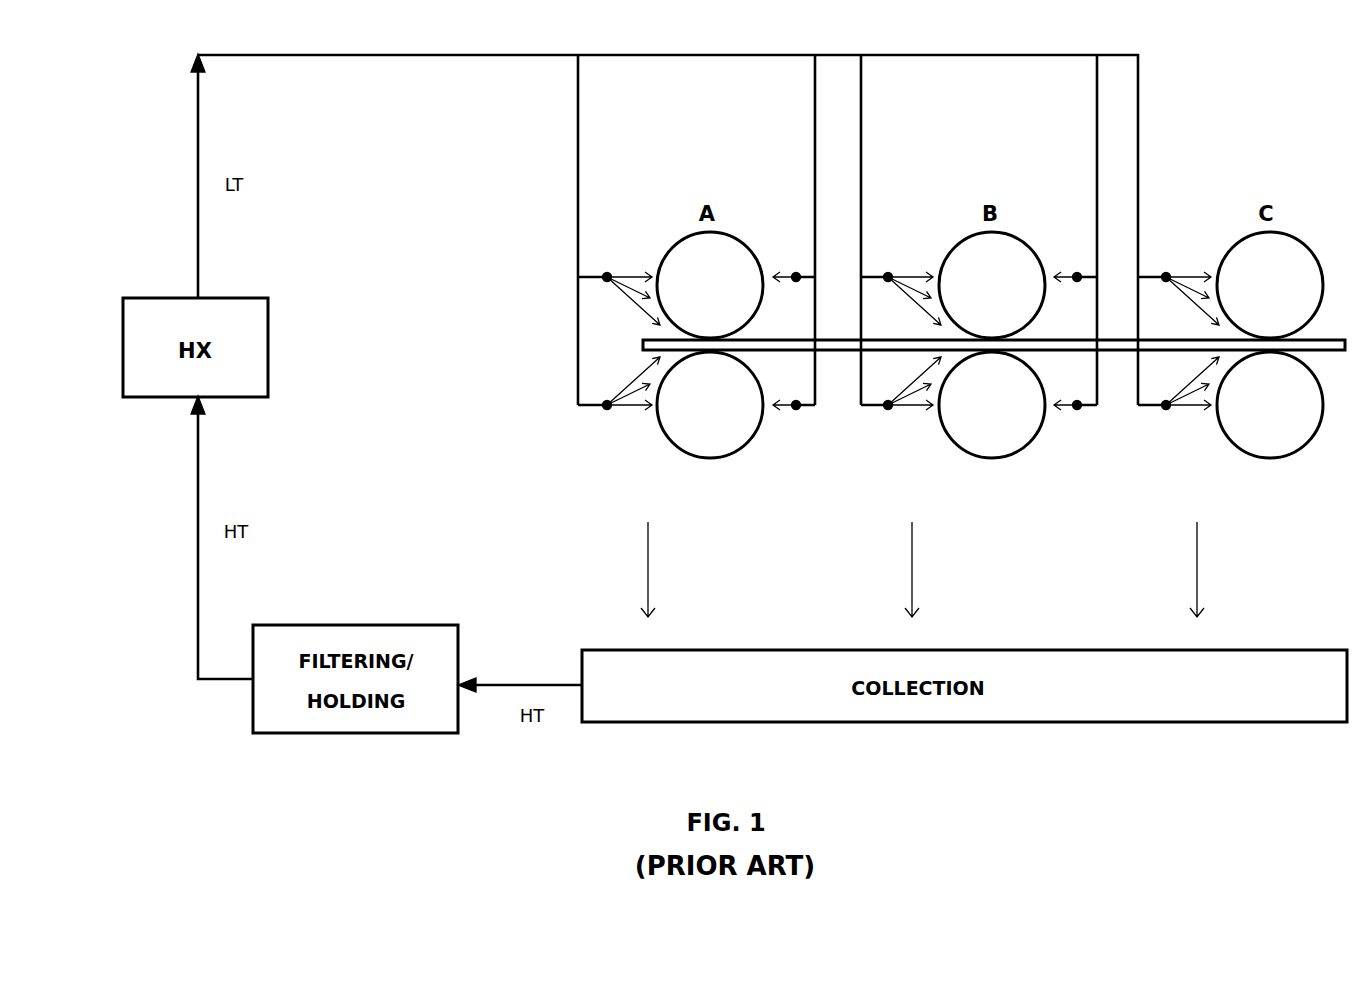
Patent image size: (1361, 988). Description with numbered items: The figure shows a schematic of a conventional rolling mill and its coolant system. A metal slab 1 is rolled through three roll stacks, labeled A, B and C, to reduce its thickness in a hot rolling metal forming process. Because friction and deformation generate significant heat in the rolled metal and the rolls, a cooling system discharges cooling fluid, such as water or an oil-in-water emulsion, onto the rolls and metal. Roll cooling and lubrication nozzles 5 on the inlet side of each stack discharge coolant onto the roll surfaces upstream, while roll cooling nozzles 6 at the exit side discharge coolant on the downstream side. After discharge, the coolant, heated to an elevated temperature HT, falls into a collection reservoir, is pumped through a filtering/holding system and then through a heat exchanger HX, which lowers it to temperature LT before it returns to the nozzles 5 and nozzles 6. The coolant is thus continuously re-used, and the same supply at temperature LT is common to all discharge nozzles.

The metal slab 1 is at (644, 338).
The roll cooling and lubrication nozzles 5 is at (606, 270).
The roll cooling nozzles 6 is at (796, 270).